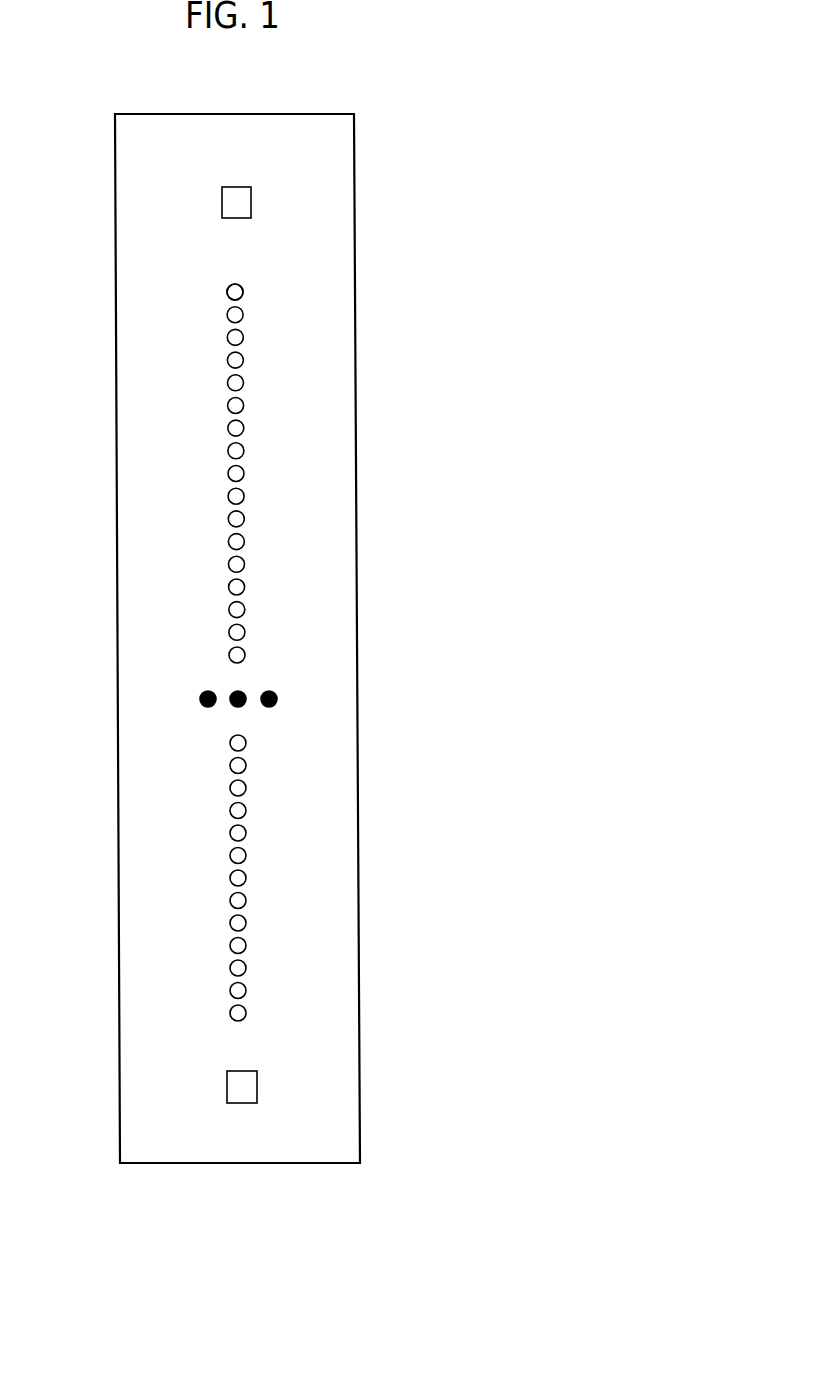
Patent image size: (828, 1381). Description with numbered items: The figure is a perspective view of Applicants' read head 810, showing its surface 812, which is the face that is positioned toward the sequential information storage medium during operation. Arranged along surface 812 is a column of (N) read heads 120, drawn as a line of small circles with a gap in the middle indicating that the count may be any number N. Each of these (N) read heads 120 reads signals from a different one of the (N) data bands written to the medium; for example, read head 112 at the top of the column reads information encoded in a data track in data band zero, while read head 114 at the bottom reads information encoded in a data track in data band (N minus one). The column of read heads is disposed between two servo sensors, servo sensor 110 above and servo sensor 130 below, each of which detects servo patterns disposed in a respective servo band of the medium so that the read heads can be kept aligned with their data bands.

The servo sensor 110 is at (238, 197).
The read head 112 is at (243, 289).
The read head 114 is at (231, 1010).
The (N) read heads 120 is at (292, 1032).
The servo sensor 130 is at (250, 1088).
The read head 810 is at (237, 730).
The surface 812 is at (257, 1146).